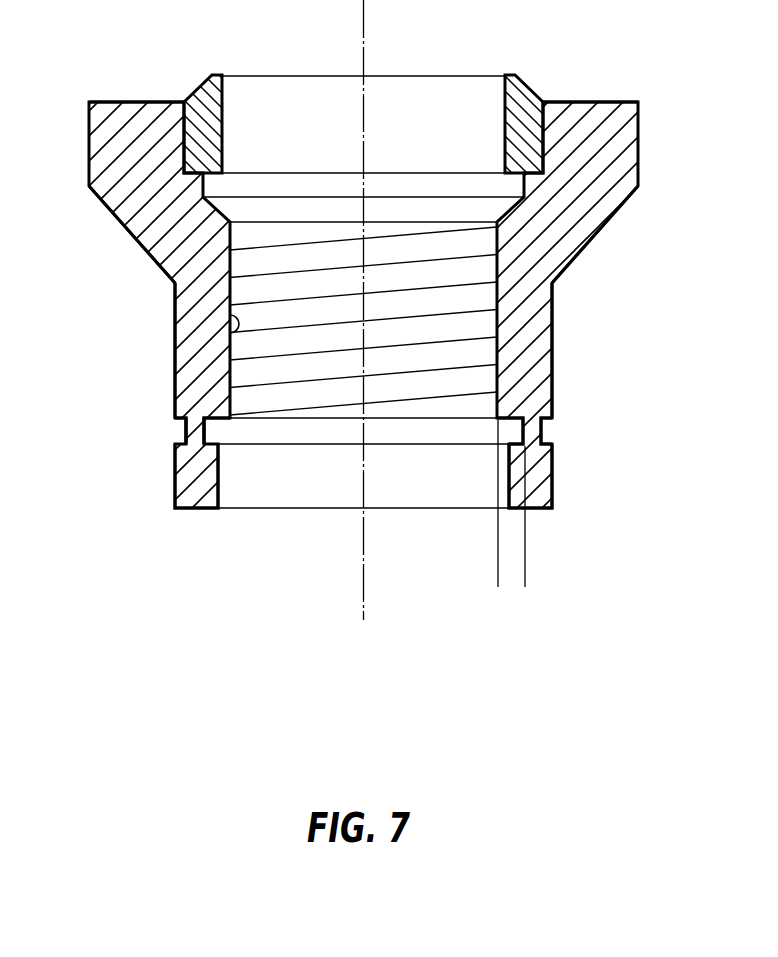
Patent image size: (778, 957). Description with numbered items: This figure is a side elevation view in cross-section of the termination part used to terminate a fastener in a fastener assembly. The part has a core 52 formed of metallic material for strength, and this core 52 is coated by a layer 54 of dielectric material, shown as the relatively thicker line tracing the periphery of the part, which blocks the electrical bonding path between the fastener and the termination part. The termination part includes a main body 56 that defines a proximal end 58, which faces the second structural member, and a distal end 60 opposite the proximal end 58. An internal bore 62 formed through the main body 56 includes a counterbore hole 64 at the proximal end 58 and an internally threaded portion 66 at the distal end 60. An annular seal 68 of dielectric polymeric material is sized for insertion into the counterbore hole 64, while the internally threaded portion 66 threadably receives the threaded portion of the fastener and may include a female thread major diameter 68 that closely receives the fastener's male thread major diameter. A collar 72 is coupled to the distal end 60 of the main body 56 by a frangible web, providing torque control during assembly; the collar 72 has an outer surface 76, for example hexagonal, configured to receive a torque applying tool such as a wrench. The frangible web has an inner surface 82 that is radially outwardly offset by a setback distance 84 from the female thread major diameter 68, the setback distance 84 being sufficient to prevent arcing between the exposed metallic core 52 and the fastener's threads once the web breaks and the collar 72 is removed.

The core 52 is at (585, 222).
The layer of dielectric material 54 is at (555, 330).
The main body 56 is at (129, 233).
The proximal end 58 is at (610, 102).
The distal end 60 is at (192, 393).
The internal bore 62 is at (232, 380).
The counterbore hole 64 is at (185, 138).
The internally threaded portion 66 is at (233, 331).
The annular seal 68 is at (203, 107).
The collar 72 is at (540, 465).
The outer surface 76 is at (555, 497).
The inner surface 82 is at (207, 432).
The setback distance 84 is at (448, 553).